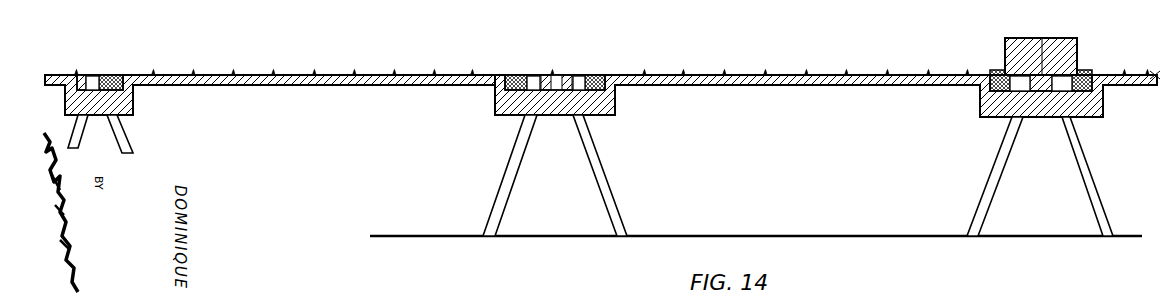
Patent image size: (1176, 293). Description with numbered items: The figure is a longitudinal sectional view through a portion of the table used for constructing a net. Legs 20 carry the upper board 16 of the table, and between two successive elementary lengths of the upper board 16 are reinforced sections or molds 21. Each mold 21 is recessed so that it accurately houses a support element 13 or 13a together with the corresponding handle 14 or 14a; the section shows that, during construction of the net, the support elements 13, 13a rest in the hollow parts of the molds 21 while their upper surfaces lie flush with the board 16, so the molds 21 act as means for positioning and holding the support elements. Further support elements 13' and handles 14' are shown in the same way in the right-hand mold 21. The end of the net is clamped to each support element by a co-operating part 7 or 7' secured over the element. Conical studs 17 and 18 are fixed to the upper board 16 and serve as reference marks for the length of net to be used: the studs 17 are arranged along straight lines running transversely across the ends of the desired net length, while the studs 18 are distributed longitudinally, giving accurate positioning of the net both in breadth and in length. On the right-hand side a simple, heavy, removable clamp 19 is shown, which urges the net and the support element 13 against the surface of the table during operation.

The co-operating part 7 is at (602, 65).
The clamping insert 7' is at (990, 53).
The support element 13 is at (601, 76).
The support block 13' is at (965, 101).
The support element 13a is at (490, 66).
The handle 14 is at (600, 87).
The groove / slot 14' is at (1004, 108).
The handle 14a is at (533, 78).
The upper board 16 is at (795, 85).
The stud 17 is at (74, 71).
The stud 18 is at (726, 55).
The clamp 19 is at (1042, 45).
The leg 20 is at (120, 131).
The mold 21 is at (590, 103).